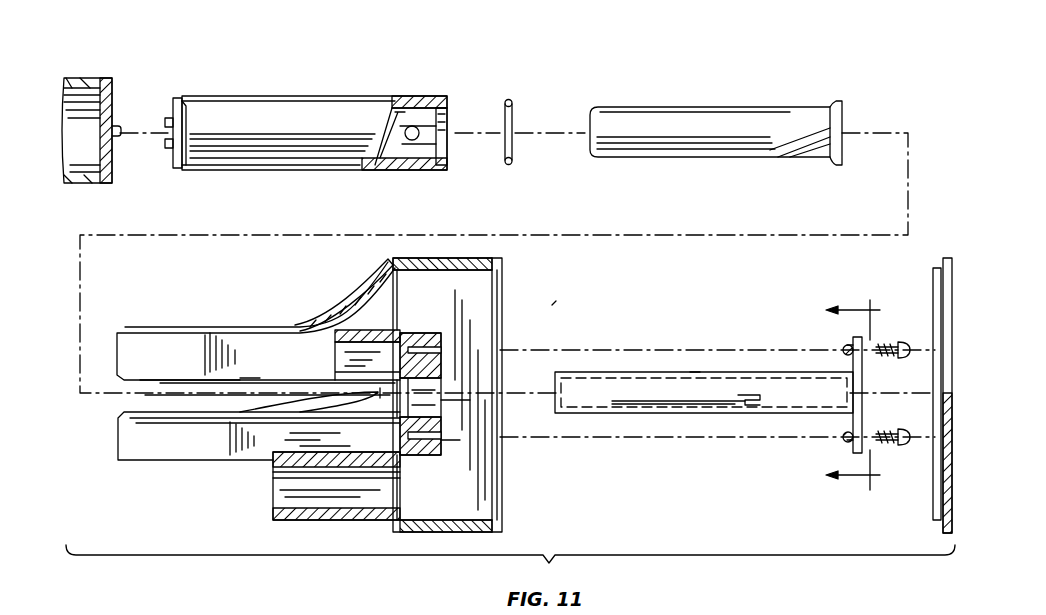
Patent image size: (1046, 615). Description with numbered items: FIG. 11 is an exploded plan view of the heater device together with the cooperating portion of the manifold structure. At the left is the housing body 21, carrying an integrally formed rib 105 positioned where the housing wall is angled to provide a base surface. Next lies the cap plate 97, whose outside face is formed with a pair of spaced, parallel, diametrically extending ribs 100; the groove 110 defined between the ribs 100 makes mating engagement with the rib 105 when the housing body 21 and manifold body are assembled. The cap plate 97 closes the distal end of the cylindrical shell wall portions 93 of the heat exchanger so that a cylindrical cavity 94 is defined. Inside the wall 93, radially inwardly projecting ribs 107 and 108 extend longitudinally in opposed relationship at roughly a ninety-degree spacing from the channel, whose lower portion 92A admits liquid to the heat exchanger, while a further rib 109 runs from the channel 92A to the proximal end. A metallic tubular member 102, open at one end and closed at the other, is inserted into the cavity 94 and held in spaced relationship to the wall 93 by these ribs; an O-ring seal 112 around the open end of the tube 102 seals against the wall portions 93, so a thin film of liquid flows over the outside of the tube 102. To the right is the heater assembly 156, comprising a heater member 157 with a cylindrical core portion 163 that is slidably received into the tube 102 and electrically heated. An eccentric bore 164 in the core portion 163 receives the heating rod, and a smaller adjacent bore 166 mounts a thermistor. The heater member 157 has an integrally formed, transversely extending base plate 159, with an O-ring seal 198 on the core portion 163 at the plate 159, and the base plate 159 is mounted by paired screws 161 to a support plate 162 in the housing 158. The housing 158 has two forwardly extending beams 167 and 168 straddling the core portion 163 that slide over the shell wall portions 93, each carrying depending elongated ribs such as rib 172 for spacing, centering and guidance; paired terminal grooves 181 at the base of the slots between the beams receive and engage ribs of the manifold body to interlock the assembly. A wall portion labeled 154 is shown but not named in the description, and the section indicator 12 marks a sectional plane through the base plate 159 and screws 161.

The housing body 21 is at (88, 78).
The rib 105 is at (121, 136).
The groove 110 is at (166, 132).
The ribs 100 is at (165, 120).
The cylindrical shell wall portions 93 is at (284, 101).
The cap plate 97 is at (184, 110).
The rib 108 is at (400, 122).
The rib 107 is at (372, 143).
The cylindrical cavity 94 is at (399, 142).
The lower channel portion 92A is at (413, 126).
The rib 109 is at (440, 108).
The O-ring seal 112 is at (512, 103).
The metallic tubular member 102 is at (702, 106).
The housing 154 is at (503, 270).
The housing 158 is at (358, 276).
The beam 167 is at (160, 340).
The rib 172 is at (345, 345).
The support plate 162 is at (432, 336).
The terminal grooves 181 is at (330, 402).
The beam 168 is at (155, 445).
The heater member 157 is at (290, 500).
The heater assembly 156 is at (552, 305).
The cylindrical core portion 163 is at (597, 372).
The eccentric bore 164 is at (695, 372).
The smaller bore 166 is at (745, 407).
The O-ring seal 198 is at (848, 352).
The base plate 159 is at (846, 350).
The screws 161 is at (898, 437).
The section line 12 is at (834, 396).